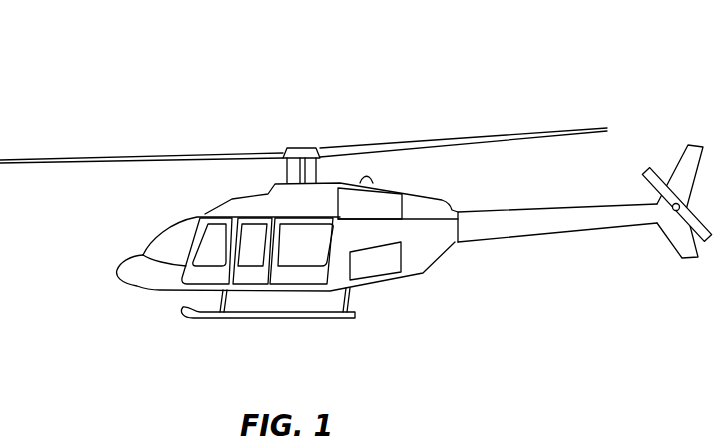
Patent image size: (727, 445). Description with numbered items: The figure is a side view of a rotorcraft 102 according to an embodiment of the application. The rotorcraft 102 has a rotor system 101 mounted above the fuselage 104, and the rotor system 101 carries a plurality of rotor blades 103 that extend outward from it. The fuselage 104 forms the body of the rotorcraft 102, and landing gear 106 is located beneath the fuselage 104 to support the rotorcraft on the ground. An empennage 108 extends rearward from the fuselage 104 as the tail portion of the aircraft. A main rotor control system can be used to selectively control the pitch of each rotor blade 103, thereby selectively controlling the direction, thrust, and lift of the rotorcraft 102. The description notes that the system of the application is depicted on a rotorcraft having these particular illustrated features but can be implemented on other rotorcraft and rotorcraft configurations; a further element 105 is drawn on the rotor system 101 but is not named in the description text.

The rotor system 101 is at (307, 142).
The rotorcraft 102 is at (125, 109).
The rotor blades 103 is at (548, 131).
The fuselage 104 is at (170, 293).
The rotor mast 105 is at (286, 173).
The landing gear 106 is at (312, 318).
The empennage 108 is at (537, 233).